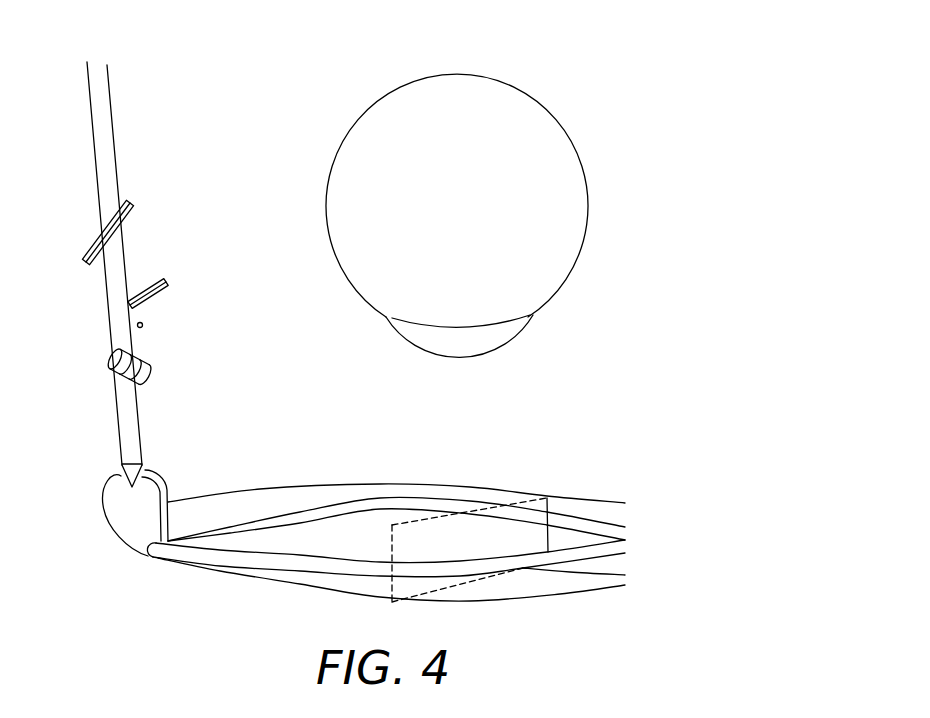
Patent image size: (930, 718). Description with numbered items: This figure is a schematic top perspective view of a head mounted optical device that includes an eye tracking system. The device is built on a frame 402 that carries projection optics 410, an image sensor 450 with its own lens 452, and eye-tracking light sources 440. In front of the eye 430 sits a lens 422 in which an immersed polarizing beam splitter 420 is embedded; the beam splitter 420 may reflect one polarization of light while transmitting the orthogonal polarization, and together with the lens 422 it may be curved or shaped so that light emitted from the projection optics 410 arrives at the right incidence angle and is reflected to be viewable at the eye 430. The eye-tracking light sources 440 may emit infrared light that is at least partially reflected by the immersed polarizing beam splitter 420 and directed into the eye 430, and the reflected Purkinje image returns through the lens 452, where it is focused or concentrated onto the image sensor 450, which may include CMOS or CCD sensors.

The frame 402 is at (112, 128).
The image sensor 450 is at (135, 210).
The lens 452 is at (160, 293).
The eye-tracking light sources 440 is at (136, 327).
The projection optics 410 is at (152, 372).
The eye 430 is at (353, 160).
The lens 422 is at (316, 528).
The immersed polarizing beam splitter 420 is at (505, 530).